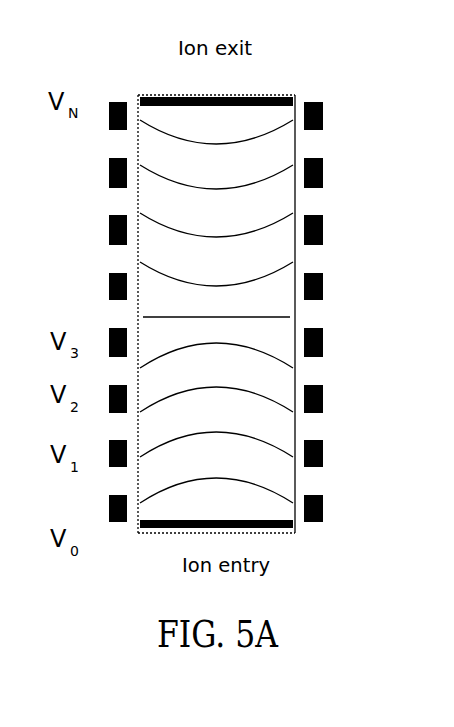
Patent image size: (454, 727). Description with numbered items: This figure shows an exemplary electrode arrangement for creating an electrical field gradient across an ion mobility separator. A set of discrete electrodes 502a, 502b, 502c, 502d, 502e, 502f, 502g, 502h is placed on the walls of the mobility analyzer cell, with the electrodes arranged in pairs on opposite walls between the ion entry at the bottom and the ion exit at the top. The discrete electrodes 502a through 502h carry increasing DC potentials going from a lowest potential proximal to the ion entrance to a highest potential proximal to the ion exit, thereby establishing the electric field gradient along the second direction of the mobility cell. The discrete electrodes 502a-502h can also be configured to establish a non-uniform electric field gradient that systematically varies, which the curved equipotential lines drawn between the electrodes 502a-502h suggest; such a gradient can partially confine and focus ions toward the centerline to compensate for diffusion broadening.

The discrete electrode 502a is at (323, 508).
The discrete electrode 502b is at (323, 457).
The discrete electrode 502c is at (323, 392).
The discrete electrode 502d is at (323, 337).
The discrete electrode 502e is at (323, 285).
The discrete electrode 502f is at (323, 226).
The discrete electrode 502g is at (323, 167).
The discrete electrode 502h is at (323, 118).